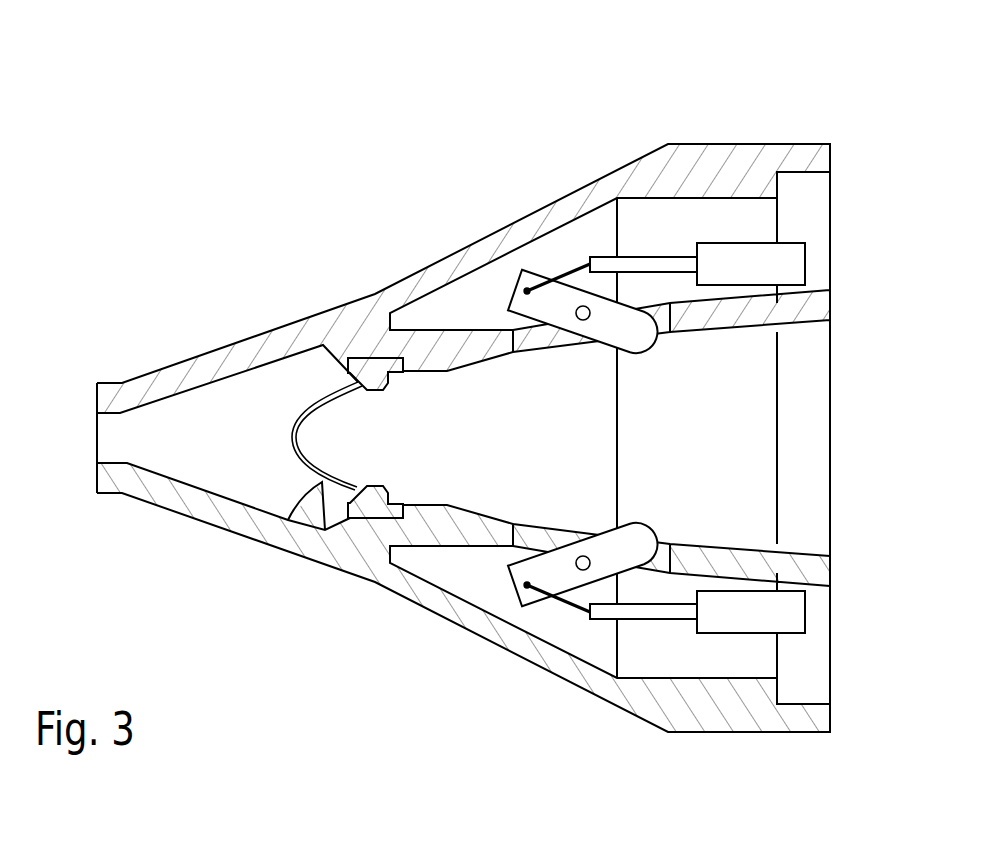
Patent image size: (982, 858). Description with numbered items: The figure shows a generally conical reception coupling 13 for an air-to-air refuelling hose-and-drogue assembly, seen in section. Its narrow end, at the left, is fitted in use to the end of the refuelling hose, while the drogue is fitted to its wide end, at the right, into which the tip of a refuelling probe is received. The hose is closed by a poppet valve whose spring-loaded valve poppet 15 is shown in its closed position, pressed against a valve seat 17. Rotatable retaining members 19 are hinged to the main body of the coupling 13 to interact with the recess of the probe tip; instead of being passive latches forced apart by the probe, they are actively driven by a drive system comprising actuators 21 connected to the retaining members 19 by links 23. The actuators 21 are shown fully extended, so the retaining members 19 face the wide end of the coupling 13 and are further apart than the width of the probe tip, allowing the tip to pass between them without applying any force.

The reception coupling 13 is at (243, 340).
The valve poppet 15 is at (288, 520).
The valve seat 17 is at (360, 520).
The rotatable retaining members 19 is at (510, 290).
The actuators 21 is at (723, 243).
The links 23 is at (570, 263).